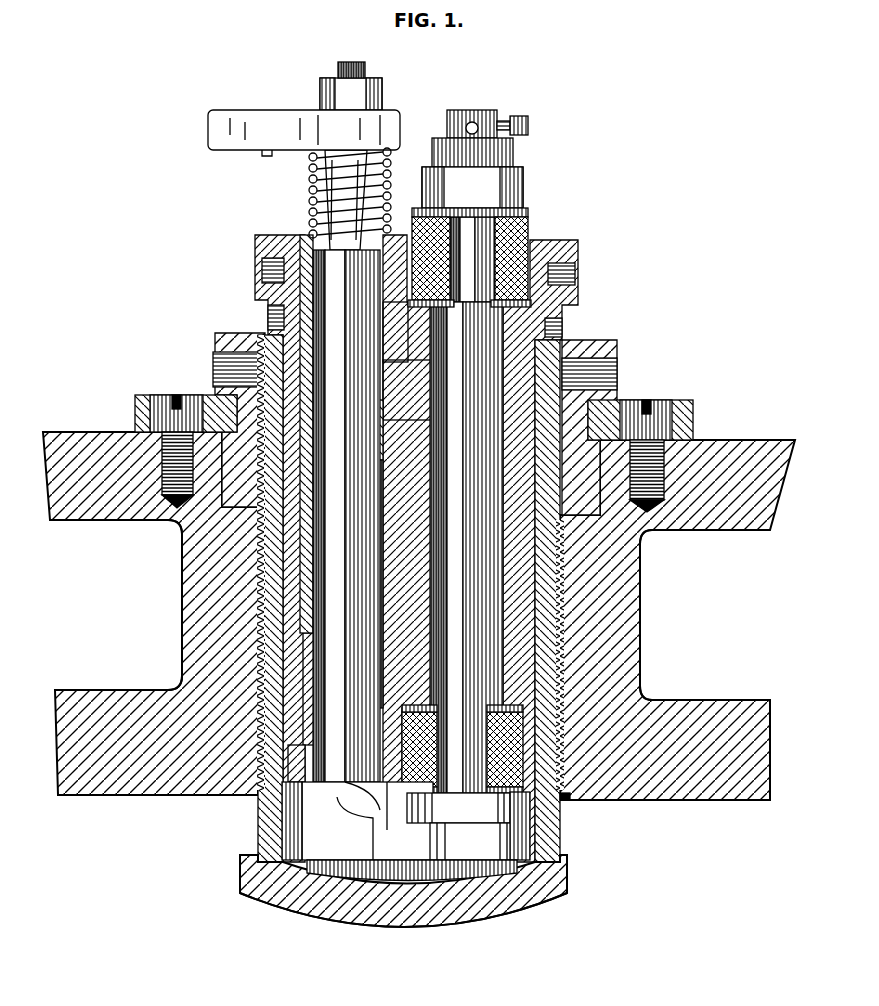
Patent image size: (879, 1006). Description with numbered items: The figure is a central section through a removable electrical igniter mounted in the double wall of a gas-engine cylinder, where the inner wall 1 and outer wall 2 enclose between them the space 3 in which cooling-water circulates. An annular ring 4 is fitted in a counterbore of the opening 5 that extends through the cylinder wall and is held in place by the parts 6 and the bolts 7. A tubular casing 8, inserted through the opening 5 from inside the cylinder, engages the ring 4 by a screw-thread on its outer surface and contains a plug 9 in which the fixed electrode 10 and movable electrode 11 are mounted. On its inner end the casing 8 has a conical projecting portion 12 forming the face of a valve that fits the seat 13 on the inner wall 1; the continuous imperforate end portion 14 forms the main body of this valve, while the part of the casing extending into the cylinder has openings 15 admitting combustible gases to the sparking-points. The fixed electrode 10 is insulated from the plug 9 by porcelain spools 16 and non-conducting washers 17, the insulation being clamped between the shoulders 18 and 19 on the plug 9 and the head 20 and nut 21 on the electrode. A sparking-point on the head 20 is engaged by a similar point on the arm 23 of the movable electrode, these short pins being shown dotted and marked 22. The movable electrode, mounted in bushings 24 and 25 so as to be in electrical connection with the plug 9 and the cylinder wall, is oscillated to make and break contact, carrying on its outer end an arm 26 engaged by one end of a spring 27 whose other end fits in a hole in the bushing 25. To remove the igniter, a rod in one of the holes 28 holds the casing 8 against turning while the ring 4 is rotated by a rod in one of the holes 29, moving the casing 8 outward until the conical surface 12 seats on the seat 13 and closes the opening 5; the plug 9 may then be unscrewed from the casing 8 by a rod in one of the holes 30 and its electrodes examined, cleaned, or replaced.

The inner wall 1 is at (419, 616).
The outer wall 2 is at (419, 463).
The space 3 is at (410, 610).
The annular ring 4 is at (416, 424).
The opening 5 is at (566, 553).
The parts 6 is at (135, 406).
The bolts 7 is at (176, 396).
The casing 8 is at (409, 548).
The plug 9 is at (416, 548).
The fixed electrode 10 is at (479, 451).
The movable electrode 11 is at (346, 466).
The conical projecting portion 12 is at (240, 872).
The seat 13 is at (565, 800).
The imperforate end portion 14 is at (412, 915).
The openings 15 is at (282, 814).
The spools 16 is at (530, 236).
The washers 17 is at (525, 217).
The shoulder 18 is at (420, 708).
The shoulder 19 is at (401, 332).
The head 20 is at (458, 808).
The nut 21 is at (470, 192).
The sparking-points 22 is at (436, 843).
The arm 23 is at (367, 821).
The bushing 24 is at (391, 554).
The bushing 25 is at (386, 377).
The arm 26 is at (304, 109).
The spring 27 is at (309, 186).
The holes 28 is at (268, 318).
The holes 29 is at (213, 368).
The holes 30 is at (262, 270).